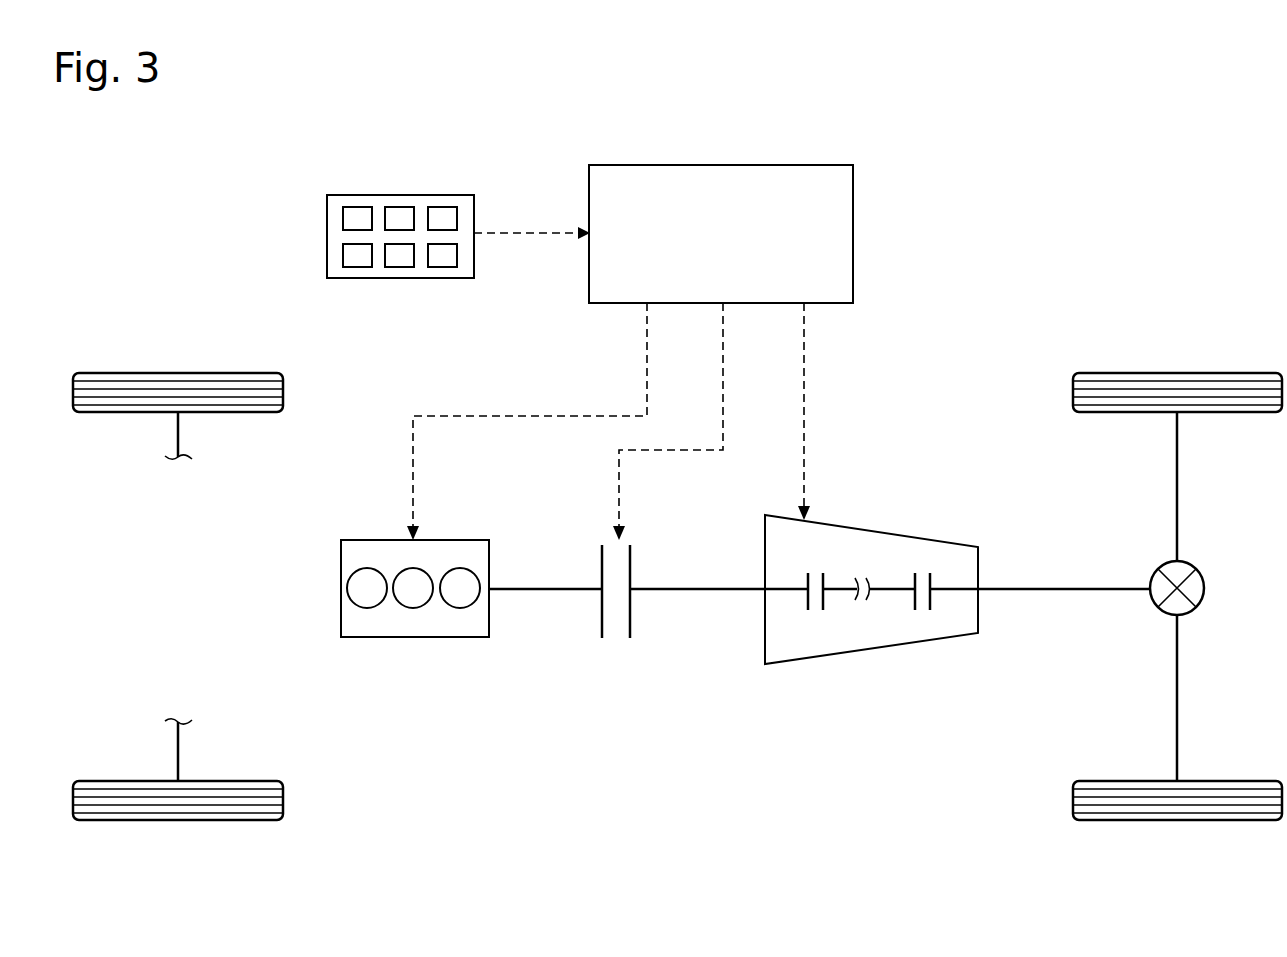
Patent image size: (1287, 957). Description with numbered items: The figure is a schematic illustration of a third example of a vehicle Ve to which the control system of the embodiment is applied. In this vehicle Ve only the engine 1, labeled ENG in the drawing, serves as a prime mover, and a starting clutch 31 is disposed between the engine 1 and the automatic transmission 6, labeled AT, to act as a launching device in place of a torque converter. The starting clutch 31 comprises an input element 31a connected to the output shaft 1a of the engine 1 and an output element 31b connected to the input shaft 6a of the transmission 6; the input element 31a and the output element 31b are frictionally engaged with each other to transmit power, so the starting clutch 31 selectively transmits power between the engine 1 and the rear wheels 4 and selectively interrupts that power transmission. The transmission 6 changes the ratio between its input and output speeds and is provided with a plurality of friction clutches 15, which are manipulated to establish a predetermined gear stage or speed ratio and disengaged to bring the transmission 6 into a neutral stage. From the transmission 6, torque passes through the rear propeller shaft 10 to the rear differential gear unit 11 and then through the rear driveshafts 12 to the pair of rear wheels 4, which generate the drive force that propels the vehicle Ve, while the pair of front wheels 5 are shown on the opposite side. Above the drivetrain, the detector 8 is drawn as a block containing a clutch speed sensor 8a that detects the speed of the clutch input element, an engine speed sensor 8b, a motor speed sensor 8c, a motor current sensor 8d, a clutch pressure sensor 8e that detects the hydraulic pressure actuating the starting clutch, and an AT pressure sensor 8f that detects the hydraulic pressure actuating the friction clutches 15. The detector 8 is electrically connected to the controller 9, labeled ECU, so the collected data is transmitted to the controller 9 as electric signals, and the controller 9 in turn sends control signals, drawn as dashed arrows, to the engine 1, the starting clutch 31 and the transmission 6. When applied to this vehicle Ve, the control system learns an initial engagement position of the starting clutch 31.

The vehicle Ve is at (997, 133).
The engine 1 is at (396, 638).
The output shaft 1a is at (558, 588).
The rear wheels 4 is at (1180, 372).
The front wheels 5 is at (185, 372).
The automatic transmission 6 is at (871, 601).
The input shaft 6a is at (708, 588).
The detector 8 is at (423, 240).
The clutch speed sensor 8a is at (357, 206).
The engine speed sensor 8b is at (400, 206).
The motor speed sensor 8c is at (445, 206).
The motor current sensor 8d is at (357, 268).
The clutch pressure sensor 8e is at (400, 268).
The AT pressure sensor 8f is at (444, 268).
The controller 9 is at (853, 232).
The rear propeller shaft 10 is at (1062, 588).
The rear differential gear unit 11 is at (1204, 590).
The rear driveshafts 12 is at (1179, 487).
The friction clutches 15 is at (818, 622).
The starting clutch 31 is at (639, 651).
The input element 31a is at (600, 637).
The output element 31b is at (632, 628).